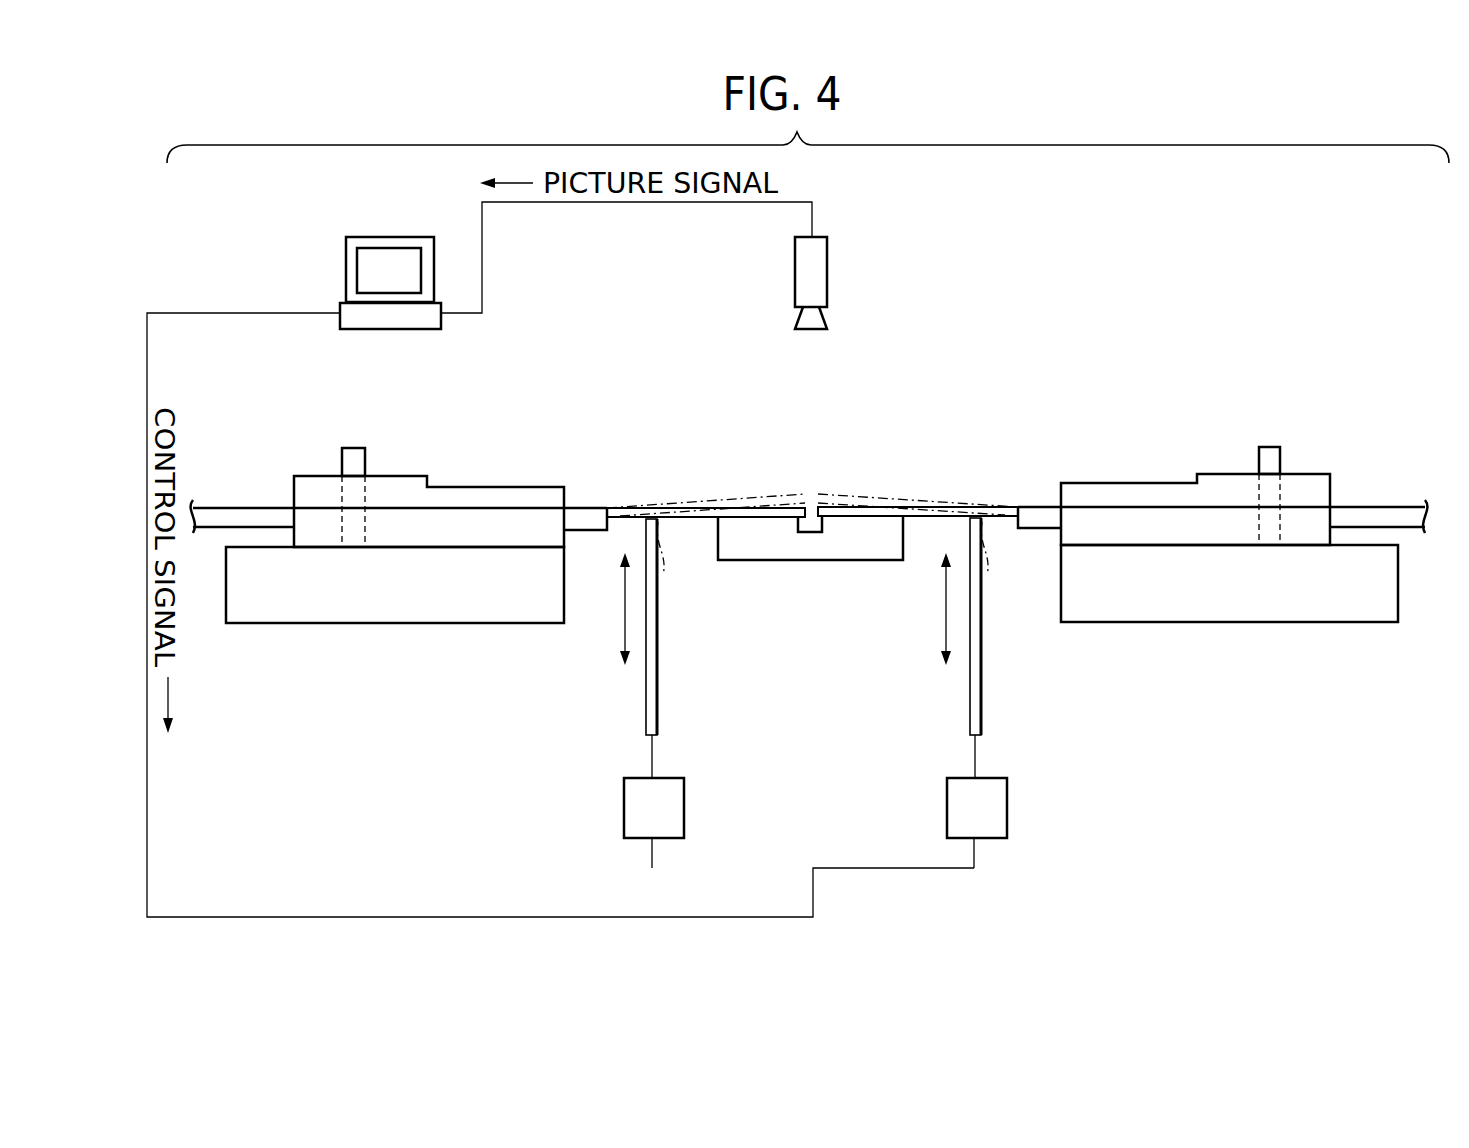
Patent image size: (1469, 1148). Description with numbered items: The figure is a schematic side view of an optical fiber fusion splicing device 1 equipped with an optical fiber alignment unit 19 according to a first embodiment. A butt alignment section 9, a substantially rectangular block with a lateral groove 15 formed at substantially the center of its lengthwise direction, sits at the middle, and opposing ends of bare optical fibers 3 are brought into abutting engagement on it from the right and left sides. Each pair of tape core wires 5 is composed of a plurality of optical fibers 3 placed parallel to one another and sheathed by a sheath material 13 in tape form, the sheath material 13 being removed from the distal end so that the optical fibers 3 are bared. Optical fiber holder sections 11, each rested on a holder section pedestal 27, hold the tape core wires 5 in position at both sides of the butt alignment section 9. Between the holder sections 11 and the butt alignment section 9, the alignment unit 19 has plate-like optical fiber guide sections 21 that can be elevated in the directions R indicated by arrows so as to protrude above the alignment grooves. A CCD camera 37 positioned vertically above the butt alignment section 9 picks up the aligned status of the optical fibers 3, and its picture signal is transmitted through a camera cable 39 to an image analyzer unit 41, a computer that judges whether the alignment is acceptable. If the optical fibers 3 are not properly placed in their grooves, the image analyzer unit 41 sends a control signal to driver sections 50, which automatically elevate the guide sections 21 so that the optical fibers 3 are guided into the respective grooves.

The optical fiber fusion splicing device 1 is at (809, 565).
The bare optical fibers 3 is at (723, 510).
The tape core wire 5 is at (262, 500).
The butt alignment section 9 is at (873, 545).
The optical fiber holder section 11 is at (462, 494).
The sheath material 13 is at (581, 512).
The lateral groove 15 is at (810, 532).
The optical fiber alignment unit 19 is at (630, 703).
The optical fiber guide section 21 is at (660, 530).
The holder section pedestal 27 is at (460, 532).
The CCD camera 37 is at (817, 268).
The camera cable 39 is at (625, 202).
The image analyzer unit 41 is at (340, 300).
The driver section 50 is at (682, 806).
The elevating directions R is at (618, 613).